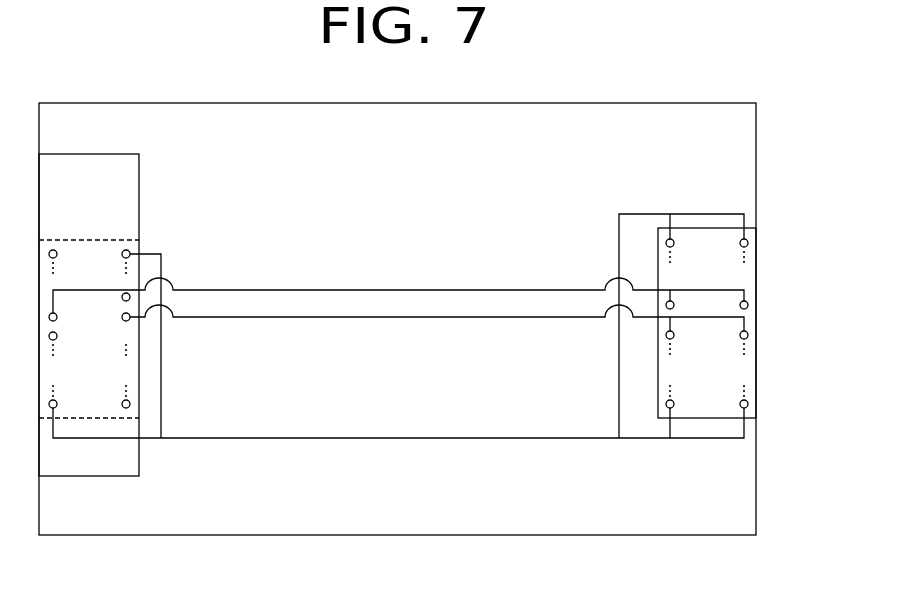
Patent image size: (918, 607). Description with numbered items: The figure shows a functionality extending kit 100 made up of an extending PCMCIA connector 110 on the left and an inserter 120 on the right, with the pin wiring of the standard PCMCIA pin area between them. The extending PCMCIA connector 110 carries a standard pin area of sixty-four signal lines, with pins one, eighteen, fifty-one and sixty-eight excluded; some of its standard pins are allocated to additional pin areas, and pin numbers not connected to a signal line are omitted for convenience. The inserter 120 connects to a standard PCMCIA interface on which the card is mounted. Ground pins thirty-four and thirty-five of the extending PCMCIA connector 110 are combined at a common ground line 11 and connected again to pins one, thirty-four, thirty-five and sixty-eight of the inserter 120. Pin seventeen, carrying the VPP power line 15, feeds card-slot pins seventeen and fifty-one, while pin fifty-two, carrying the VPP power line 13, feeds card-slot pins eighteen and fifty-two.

The functionality extending kit 100 is at (726, 103).
The extending PCMCIA connector 110 is at (85, 154).
The inserter 120 is at (756, 353).
The common ground line 11 is at (222, 438).
The VPP power line 13 is at (343, 316).
The VPP power line 15 is at (397, 290).